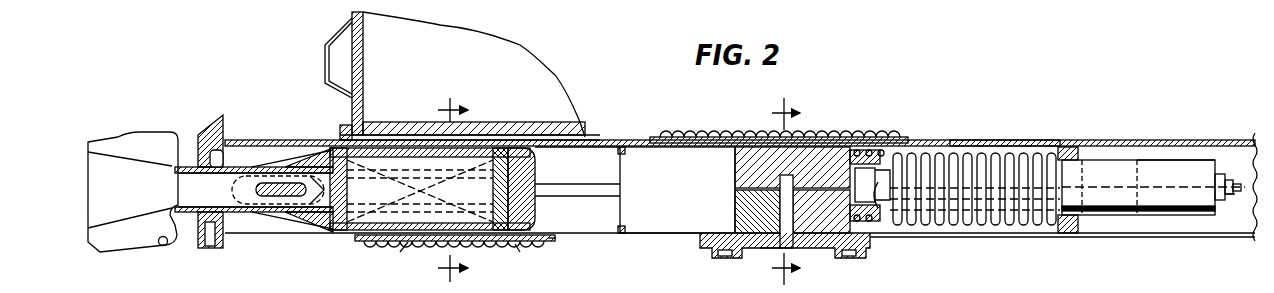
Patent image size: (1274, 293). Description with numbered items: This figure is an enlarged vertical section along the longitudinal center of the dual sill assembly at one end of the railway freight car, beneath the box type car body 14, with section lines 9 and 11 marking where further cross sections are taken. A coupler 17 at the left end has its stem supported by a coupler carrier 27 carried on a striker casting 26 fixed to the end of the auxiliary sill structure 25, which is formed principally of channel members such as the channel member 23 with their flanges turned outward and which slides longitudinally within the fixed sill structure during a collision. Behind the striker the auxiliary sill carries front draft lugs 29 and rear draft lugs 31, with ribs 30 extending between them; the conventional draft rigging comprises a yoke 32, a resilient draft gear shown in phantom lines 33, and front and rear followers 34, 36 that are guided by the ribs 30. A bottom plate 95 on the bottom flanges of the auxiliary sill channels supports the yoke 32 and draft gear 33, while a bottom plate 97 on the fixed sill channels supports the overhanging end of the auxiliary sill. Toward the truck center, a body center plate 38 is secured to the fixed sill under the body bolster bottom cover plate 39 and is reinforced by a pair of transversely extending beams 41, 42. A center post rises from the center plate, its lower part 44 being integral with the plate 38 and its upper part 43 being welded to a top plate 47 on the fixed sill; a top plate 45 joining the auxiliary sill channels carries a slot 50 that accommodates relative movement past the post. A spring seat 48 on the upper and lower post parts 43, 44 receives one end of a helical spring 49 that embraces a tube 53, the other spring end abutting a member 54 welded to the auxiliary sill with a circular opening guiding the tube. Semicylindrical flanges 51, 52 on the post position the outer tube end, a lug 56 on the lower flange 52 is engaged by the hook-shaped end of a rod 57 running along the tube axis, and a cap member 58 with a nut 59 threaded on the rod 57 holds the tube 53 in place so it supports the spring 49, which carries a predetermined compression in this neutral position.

The section line 9- 9 is at (451, 191).
The section line 11- 11 is at (782, 192).
The car body 14 is at (546, 74).
The coupler 17 is at (150, 134).
The channel member 23 is at (673, 199).
The auxiliary sill structure 25 is at (258, 139).
The striker casting 26 is at (214, 128).
The coupler carrier 27 is at (223, 248).
The front draft lugs 29 is at (293, 152).
The ribs 30 is at (378, 248).
The rear draft lugs 31 is at (606, 176).
The yoke 32 is at (404, 254).
The resilient draft gear 33 is at (426, 196).
The front follower 34 is at (350, 188).
The rear follower 36 is at (494, 188).
The body center plate 38 is at (764, 250).
The body bolster bottom cover plate 39 is at (714, 237).
The transversely extending beam 41 is at (720, 257).
The transversely extending beam 42 is at (842, 253).
The upper part of center post 43 is at (735, 168).
The lower part of center post 44 is at (736, 209).
The top plate 45 is at (560, 146).
The top plate 47 is at (702, 134).
The spring seat 48 is at (850, 158).
The spring 49 is at (1030, 152).
The slot 50 is at (640, 144).
The semicylindrical flange 51 is at (857, 150).
The semicylindrical flange 52 is at (848, 197).
The tube 53 is at (1118, 183).
The member 54 is at (1066, 146).
The lug 56 is at (866, 223).
The rod 57 is at (1176, 172).
The cap member 58 is at (1222, 173).
The nut 59 is at (1228, 200).
The bottom plate 95 is at (550, 236).
The bottom plate 97 is at (526, 255).